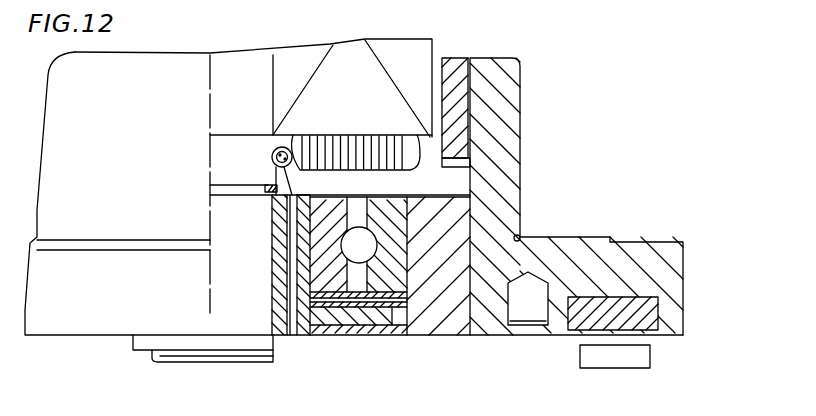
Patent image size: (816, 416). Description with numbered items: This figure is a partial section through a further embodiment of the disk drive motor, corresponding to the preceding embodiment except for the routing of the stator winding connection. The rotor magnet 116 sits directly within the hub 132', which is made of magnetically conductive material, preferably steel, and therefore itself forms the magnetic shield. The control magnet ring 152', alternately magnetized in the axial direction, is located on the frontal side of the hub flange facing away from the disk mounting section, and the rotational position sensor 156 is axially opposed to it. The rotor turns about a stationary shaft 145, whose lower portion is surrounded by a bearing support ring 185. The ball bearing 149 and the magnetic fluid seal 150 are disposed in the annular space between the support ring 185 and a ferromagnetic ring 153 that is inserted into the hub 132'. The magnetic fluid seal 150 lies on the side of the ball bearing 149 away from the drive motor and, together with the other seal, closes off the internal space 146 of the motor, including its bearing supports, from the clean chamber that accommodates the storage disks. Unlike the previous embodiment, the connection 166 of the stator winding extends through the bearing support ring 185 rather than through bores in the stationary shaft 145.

The rotor magnet 116 is at (455, 113).
The hub 132' is at (525, 196).
The stationary shaft 145 is at (212, 345).
The internal space 146 is at (434, 190).
The ball bearing support 149 is at (400, 262).
The magnetic fluid seal 150 is at (380, 318).
The control magnet ring 152' is at (595, 273).
The ferromagnetic ring 153 is at (453, 313).
The rotational position sensor 156 is at (592, 351).
The connection of the stator winding 166 is at (292, 337).
The bearing support ring 185 is at (305, 325).